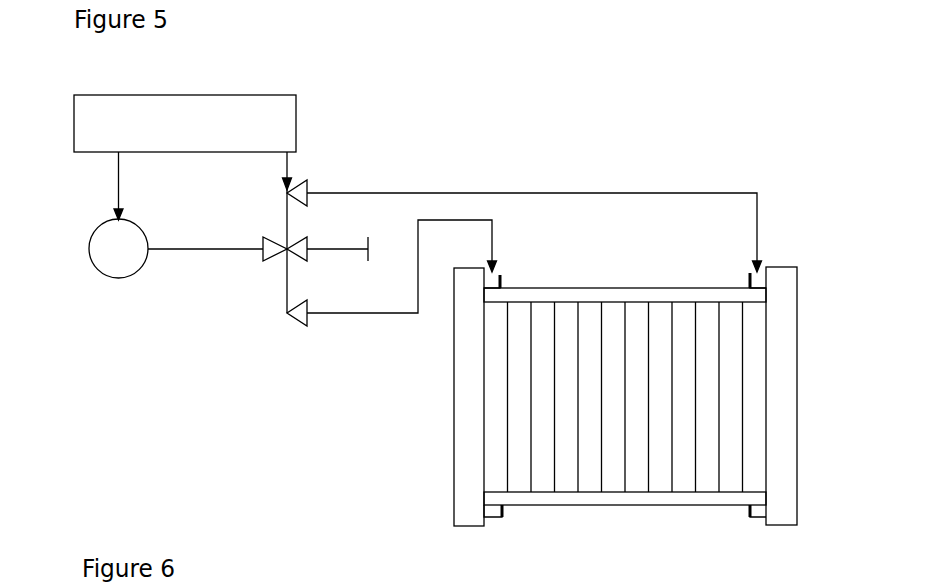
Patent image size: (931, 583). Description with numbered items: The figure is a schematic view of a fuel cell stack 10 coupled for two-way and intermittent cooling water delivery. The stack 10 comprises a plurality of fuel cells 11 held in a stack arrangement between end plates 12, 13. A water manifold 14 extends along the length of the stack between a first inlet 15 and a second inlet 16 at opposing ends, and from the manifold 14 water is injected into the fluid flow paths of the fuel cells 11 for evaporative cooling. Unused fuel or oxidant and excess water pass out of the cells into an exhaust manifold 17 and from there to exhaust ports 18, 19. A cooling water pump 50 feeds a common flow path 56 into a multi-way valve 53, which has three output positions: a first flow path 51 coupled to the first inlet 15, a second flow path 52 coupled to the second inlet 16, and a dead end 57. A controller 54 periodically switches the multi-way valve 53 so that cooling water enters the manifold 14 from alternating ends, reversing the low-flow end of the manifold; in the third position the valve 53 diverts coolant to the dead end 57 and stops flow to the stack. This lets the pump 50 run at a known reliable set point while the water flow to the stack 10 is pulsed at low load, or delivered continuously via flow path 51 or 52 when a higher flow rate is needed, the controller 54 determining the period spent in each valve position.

The fuel cell stack 10 is at (424, 466).
The fuel cells 11 is at (578, 310).
The end plate 12 is at (465, 383).
The end plate 13 is at (787, 377).
The manifold 14 is at (530, 293).
The first inlet 15 is at (500, 277).
The second inlet 16 is at (750, 270).
The exhaust manifold 17 is at (625, 500).
The exhaust port 18 is at (500, 518).
The exhaust port 19 is at (750, 513).
The cooling water pump 50 is at (98, 270).
The first flow path 51 is at (342, 313).
The second flow path 52 is at (362, 193).
The multi-way valve 53 is at (285, 273).
The controller 54 is at (74, 118).
The common flow path 56 is at (190, 250).
The dead end 57 is at (332, 248).